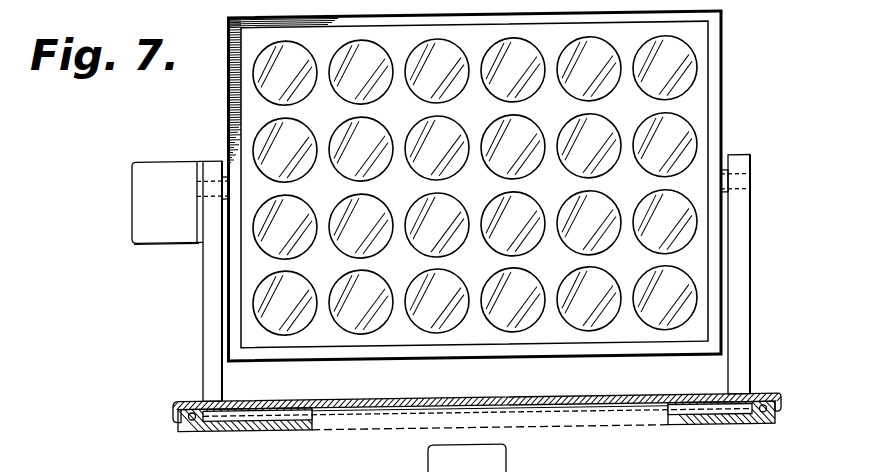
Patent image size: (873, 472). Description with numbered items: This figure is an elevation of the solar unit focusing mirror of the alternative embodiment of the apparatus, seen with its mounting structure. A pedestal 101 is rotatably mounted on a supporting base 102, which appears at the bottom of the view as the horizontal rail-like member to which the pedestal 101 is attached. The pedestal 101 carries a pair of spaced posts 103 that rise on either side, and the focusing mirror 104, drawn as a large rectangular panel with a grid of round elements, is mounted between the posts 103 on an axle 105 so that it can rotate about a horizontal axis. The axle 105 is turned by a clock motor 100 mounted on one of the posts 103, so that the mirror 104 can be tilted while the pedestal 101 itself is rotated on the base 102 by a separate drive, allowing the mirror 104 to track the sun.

The clock motor 100 is at (153, 167).
The pedestal 101 is at (378, 400).
The supporting base 102 is at (257, 433).
The spaced posts 103 is at (205, 302).
The focusing mirror 104 is at (470, 329).
The axle 105 is at (213, 184).